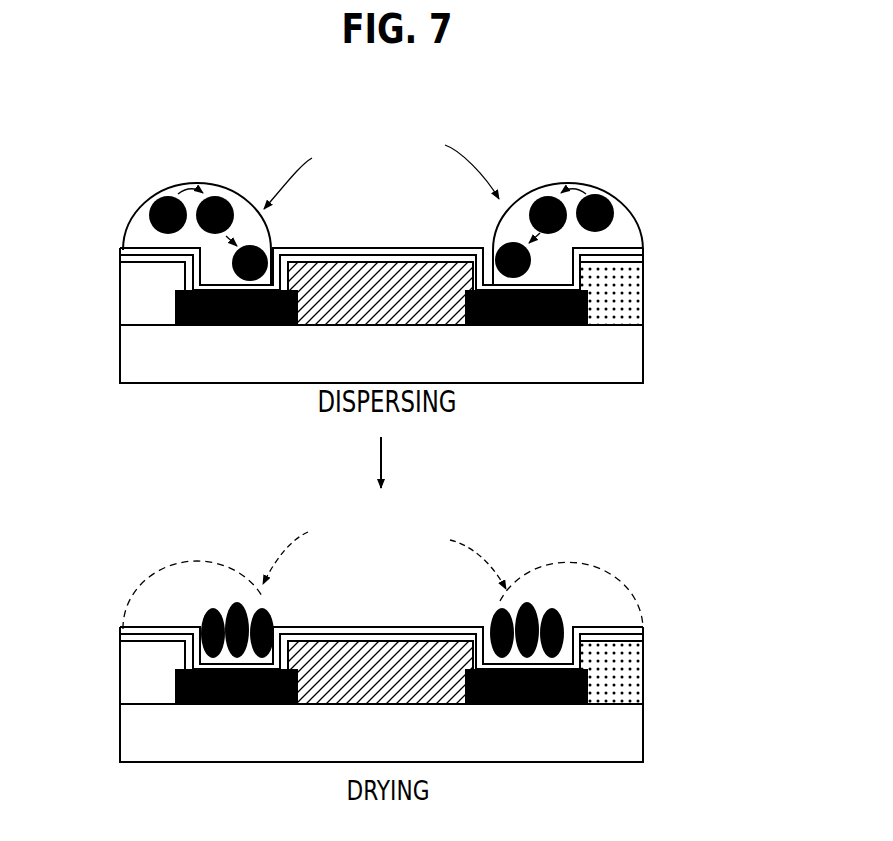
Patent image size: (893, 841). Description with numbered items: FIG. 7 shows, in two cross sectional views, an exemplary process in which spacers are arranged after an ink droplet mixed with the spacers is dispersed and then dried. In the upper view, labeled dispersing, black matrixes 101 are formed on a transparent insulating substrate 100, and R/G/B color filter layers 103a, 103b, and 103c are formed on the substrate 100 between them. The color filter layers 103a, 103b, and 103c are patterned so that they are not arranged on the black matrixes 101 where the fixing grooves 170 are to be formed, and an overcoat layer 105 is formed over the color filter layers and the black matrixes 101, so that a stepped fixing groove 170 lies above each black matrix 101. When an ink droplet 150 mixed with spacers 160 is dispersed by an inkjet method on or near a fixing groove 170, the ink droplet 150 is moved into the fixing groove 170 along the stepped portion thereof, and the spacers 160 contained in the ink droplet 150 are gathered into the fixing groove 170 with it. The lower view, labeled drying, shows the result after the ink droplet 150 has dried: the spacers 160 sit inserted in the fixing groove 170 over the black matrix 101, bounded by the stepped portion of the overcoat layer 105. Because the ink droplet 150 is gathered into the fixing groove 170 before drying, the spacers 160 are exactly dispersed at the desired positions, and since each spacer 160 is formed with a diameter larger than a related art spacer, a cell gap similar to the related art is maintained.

The transparent insulating substrate 100 is at (622, 367).
The black matrix 101 is at (175, 303).
The R color filter layer 103a is at (140, 270).
The G color filter layer 103b is at (368, 272).
The B color filter layer 103c is at (622, 268).
The overcoat layer 105 is at (642, 257).
The ink droplet 150 is at (190, 183).
The spacer 160 is at (221, 203).
The fixing groove 170 is at (384, 358).